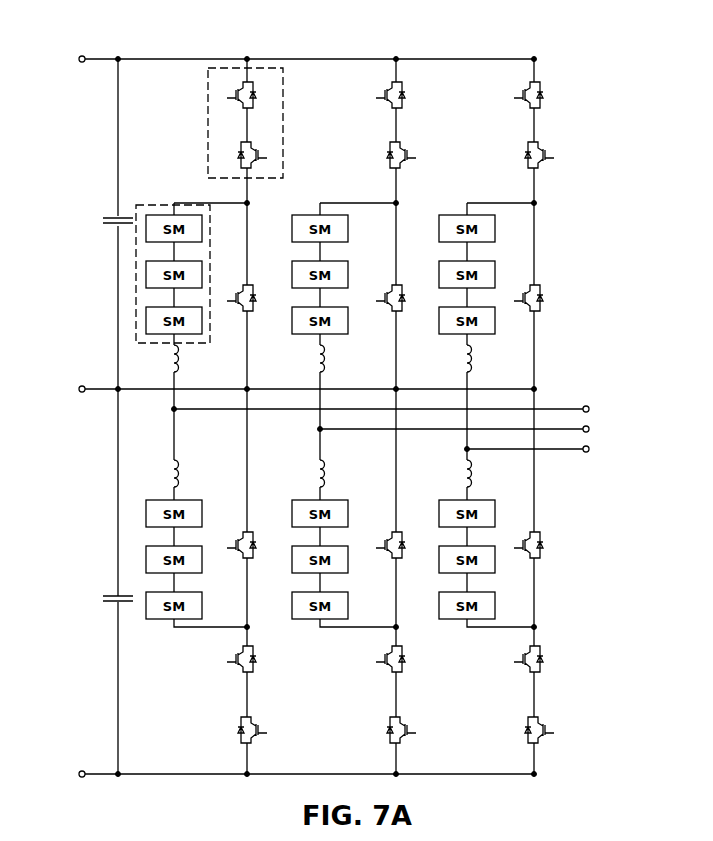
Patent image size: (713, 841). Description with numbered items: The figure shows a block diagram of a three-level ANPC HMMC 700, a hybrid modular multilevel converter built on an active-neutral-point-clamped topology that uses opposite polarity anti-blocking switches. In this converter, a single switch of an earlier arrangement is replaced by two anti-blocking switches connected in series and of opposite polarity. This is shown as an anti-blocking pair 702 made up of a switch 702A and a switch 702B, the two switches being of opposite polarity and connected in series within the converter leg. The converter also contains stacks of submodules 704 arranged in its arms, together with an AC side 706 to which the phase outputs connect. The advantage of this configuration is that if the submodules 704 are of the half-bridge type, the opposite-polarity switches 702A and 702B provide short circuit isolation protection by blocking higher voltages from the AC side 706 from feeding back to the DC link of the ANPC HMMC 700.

The 3-level ANPC HMMC 700 is at (342, 27).
The anti-blocking pair 702 is at (285, 92).
The switch 702A is at (233, 103).
The switch 702B is at (237, 150).
The submodules 704 is at (128, 262).
The AC side 706 is at (600, 384).